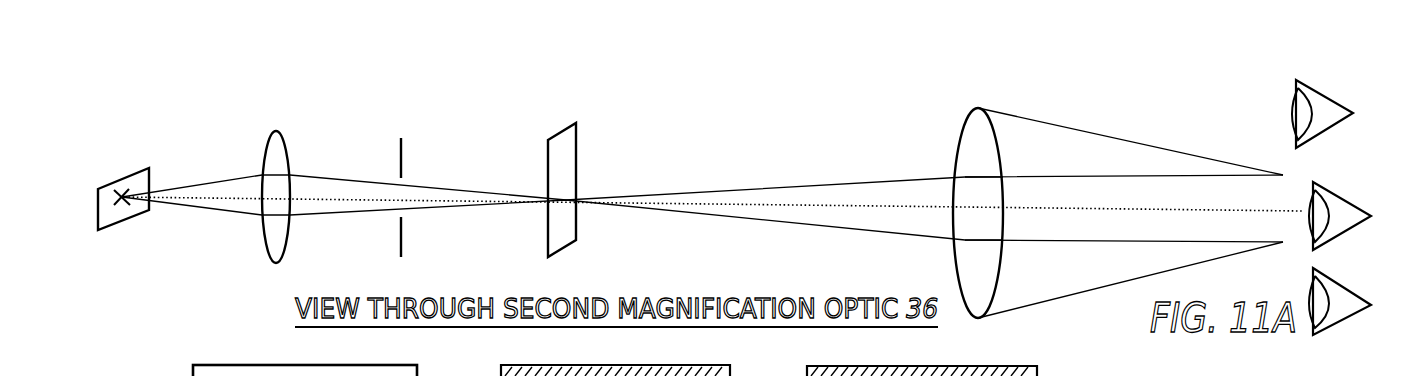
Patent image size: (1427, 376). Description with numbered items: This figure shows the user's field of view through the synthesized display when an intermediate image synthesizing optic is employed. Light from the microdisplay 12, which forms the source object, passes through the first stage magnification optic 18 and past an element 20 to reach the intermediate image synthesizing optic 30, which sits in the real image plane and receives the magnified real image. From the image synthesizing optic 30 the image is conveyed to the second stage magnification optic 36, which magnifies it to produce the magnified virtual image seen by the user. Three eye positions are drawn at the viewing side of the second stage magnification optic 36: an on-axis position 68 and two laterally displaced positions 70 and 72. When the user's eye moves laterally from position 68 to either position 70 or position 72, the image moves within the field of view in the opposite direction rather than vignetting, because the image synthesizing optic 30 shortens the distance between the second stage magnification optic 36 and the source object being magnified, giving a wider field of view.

The microdisplay 12 is at (113, 182).
The first stage magnification optic 18 is at (253, 178).
The aperture stop 20 is at (367, 172).
The reflective image synthesizing optic 30 is at (541, 168).
The second stage magnification optic 36 is at (947, 208).
The position 68 is at (1358, 201).
The position 70 is at (1339, 93).
The position 72 is at (1353, 322).